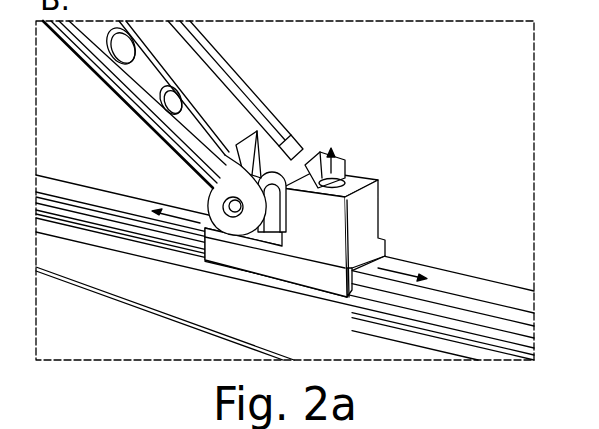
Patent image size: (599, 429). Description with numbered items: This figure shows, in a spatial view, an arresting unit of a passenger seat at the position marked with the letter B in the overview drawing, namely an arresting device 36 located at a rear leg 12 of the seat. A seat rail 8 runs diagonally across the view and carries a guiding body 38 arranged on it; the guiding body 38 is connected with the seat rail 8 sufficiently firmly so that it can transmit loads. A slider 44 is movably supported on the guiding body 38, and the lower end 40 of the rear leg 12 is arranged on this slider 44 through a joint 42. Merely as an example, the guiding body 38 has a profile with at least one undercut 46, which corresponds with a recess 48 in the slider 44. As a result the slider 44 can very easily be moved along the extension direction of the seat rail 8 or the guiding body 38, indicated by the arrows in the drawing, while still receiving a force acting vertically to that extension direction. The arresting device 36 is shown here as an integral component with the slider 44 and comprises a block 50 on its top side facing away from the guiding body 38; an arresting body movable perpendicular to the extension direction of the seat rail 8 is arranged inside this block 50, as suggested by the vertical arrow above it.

The seat rail 8 is at (143, 295).
The rear leg 12 is at (83, 65).
The arresting device 36 is at (405, 118).
The guiding body 38 is at (457, 288).
The lower end 40 is at (298, 130).
The joint 42 is at (223, 206).
The slider 44 is at (280, 258).
The undercut 46 is at (378, 292).
The recess 48 is at (367, 275).
The block 50 is at (372, 205).